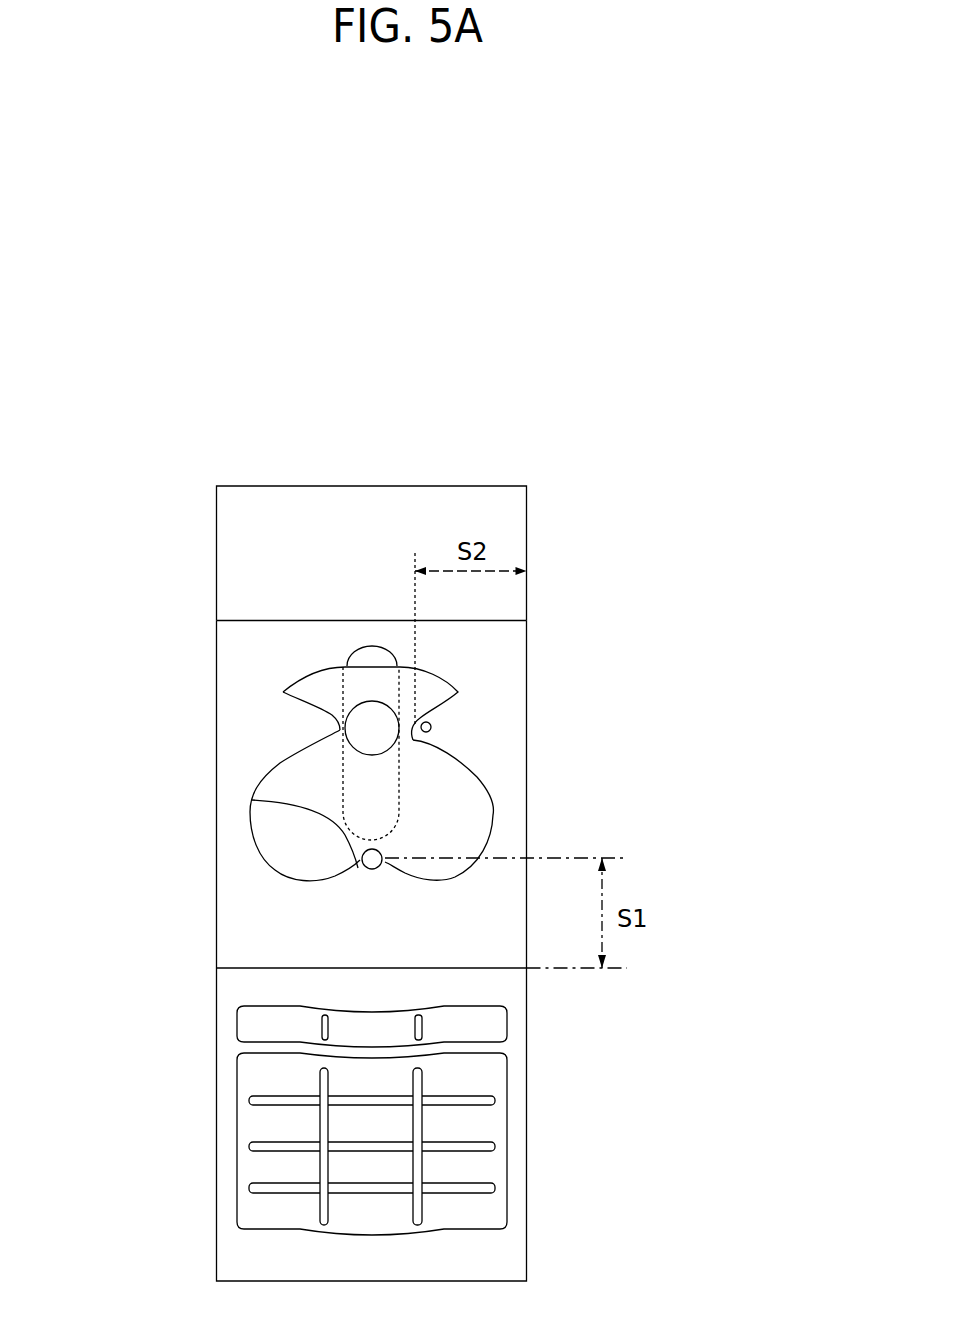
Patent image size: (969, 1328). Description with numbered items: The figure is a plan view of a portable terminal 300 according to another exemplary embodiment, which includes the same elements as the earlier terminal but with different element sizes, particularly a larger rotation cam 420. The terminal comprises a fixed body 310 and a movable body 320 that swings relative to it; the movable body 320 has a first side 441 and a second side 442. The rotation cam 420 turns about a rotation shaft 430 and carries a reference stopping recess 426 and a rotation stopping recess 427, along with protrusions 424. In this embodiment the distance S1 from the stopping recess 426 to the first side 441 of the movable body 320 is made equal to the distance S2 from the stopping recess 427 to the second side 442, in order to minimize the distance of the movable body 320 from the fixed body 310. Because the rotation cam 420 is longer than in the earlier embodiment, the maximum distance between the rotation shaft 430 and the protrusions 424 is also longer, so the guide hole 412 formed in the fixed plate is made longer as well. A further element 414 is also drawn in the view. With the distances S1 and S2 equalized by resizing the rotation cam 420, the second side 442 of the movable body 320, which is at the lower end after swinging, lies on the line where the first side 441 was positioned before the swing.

The portable terminal 300 is at (676, 378).
The fixed body 310 is at (527, 1123).
The movable body 320 is at (527, 537).
The guide hole 412 is at (372, 657).
The lower hinge 414 is at (371, 869).
The rotation cam 420 is at (250, 843).
The protrusions 424 is at (430, 883).
The stopping recess 426 is at (252, 800).
The stopping recess 427 is at (433, 727).
The rotation shaft 430 is at (370, 720).
The first side 441 is at (477, 972).
The second side 442 is at (528, 682).